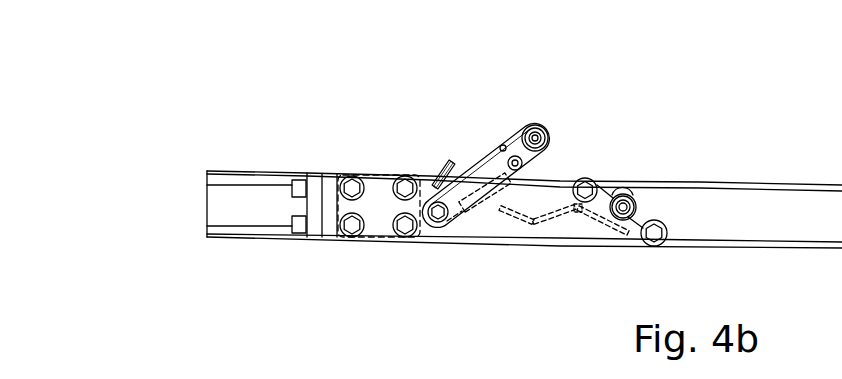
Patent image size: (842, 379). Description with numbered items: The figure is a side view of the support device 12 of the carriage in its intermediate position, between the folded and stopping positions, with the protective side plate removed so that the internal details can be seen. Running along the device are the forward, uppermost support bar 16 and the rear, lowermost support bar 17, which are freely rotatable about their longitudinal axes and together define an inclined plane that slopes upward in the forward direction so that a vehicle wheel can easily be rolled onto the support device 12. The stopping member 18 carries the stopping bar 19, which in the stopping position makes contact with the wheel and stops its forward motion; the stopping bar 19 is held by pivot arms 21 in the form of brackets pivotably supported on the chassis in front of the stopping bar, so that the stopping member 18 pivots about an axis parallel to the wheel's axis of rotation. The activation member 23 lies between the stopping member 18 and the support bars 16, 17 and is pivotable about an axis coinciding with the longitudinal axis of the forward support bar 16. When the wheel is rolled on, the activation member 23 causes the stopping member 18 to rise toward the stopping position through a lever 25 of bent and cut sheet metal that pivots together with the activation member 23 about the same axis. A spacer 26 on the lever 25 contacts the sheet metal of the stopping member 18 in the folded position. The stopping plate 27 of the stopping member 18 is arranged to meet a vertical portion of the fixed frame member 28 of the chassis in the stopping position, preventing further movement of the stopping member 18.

The support device 12 is at (509, 68).
The forward, uppermost support bar 16 is at (597, 178).
The rear, lowermost support bar 17 is at (657, 222).
The stopping member 18 is at (487, 123).
The stopping bar 19 is at (535, 122).
The pivot arms 21 is at (483, 168).
The activation member 23 is at (638, 190).
The lever 25 is at (543, 224).
The spacer 26 is at (515, 208).
The stopping plate 27 is at (421, 178).
The fixed frame member 28 is at (380, 190).